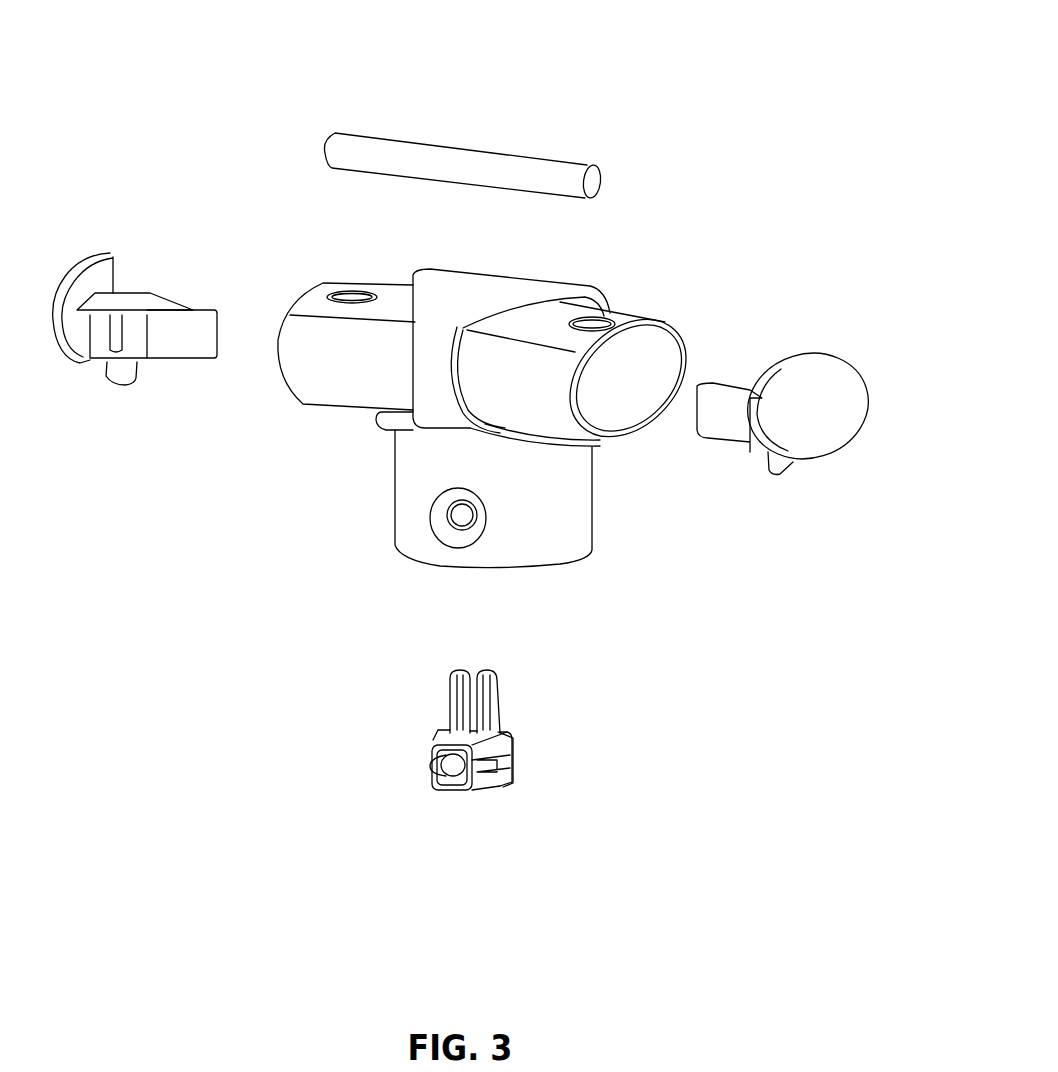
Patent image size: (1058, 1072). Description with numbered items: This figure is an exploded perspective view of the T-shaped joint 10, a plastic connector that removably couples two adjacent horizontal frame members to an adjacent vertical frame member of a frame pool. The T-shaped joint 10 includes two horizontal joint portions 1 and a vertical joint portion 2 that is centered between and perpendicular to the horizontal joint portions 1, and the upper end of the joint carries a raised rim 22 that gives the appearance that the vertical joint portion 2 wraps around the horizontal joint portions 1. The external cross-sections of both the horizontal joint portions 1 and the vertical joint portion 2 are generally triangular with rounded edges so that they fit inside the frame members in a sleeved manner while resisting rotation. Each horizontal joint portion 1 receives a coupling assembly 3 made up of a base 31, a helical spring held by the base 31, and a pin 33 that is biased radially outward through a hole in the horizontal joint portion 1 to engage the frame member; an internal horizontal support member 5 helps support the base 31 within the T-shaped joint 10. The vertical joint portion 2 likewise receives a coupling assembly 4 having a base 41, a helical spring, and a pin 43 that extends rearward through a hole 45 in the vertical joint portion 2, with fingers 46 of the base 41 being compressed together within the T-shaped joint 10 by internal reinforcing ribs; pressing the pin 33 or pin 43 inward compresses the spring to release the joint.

The horizontal joint portion 1 is at (343, 350).
The vertical joint portion 2 is at (467, 529).
The coupling assembly 3 is at (157, 327).
The coupling assembly 4 is at (532, 753).
The internal horizontal support member 5 is at (489, 166).
The T-shaped joint 10 is at (326, 255).
The raised rim 22 is at (510, 283).
The base 31 is at (847, 402).
The pin 33 is at (780, 473).
The base 41 is at (512, 743).
The pin 43 is at (440, 767).
The hole 45 is at (458, 515).
The fingers 46 is at (455, 685).